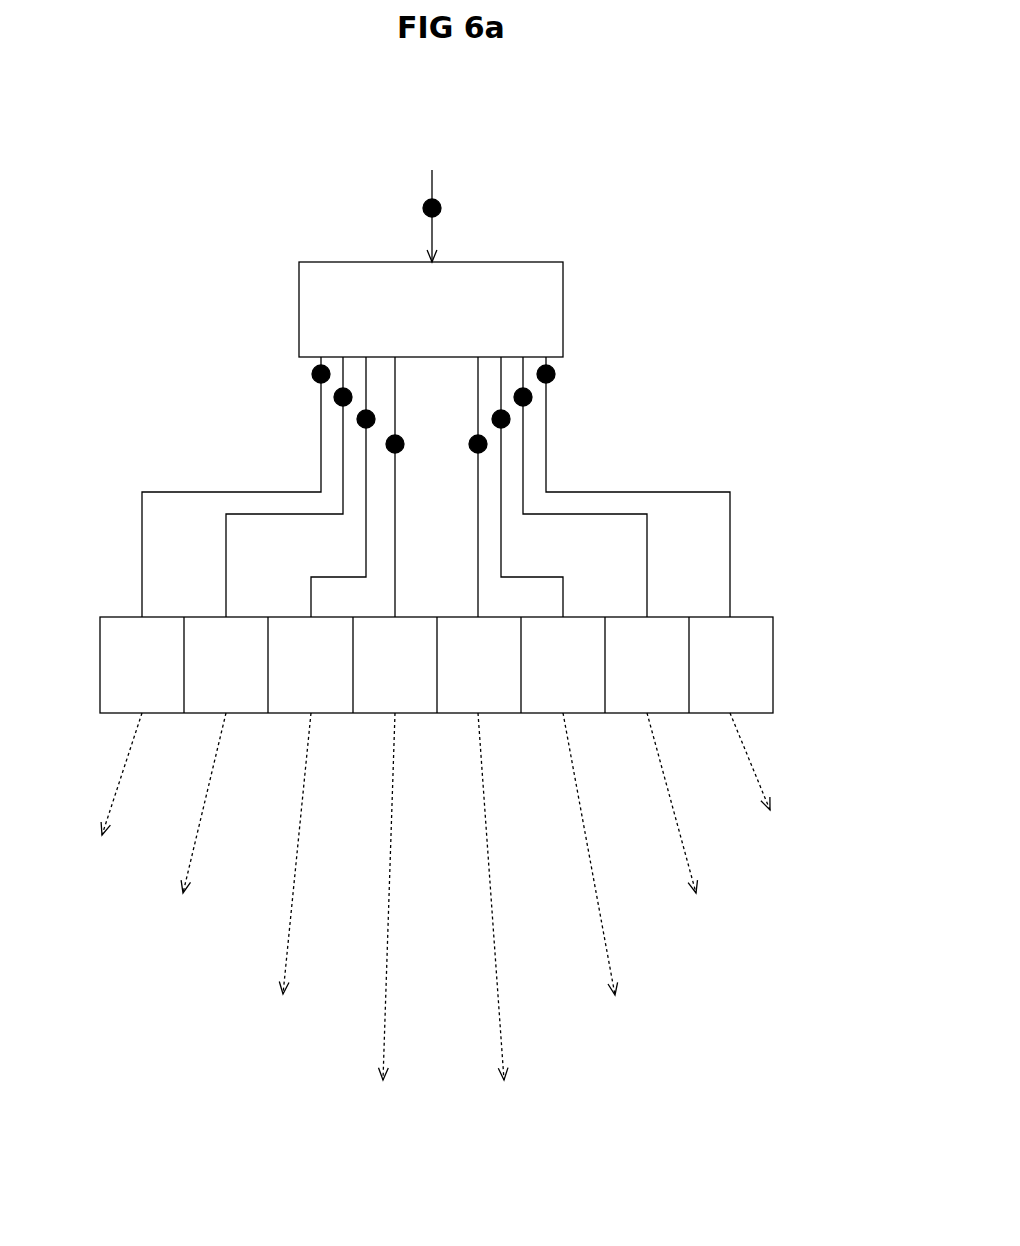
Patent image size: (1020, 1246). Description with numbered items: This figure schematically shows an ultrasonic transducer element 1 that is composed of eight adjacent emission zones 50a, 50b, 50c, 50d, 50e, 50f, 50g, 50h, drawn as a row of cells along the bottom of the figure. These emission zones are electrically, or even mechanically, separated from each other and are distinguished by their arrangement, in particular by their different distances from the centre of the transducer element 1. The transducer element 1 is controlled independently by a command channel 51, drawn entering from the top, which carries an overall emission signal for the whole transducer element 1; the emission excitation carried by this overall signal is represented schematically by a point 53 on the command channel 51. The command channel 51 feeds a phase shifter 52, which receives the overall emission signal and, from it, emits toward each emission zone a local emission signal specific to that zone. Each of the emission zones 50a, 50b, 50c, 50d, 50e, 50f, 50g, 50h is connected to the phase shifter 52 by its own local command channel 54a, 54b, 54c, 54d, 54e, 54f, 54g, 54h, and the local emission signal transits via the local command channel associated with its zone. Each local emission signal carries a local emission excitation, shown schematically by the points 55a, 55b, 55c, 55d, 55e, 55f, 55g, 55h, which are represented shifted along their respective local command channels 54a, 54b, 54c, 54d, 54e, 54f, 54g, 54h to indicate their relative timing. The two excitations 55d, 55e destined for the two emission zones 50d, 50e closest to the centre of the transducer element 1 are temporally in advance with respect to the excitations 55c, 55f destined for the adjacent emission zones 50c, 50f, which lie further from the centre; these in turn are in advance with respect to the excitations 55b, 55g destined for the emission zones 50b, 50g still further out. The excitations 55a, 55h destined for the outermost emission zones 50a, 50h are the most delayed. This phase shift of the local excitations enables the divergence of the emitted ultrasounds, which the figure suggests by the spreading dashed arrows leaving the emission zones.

The transducer element 1 is at (803, 651).
The command channel 51 is at (432, 180).
The phase shifter 52 is at (563, 318).
The point 53 is at (441, 206).
The local command channel 54a is at (142, 515).
The local command channel 54b is at (226, 540).
The local command channel 54c is at (366, 560).
The local command channel 54d is at (395, 603).
The local command channel 54e is at (478, 557).
The local command channel 54f is at (501, 572).
The local command channel 54g is at (647, 577).
The local command channel 54h is at (730, 510).
The point 55a is at (313, 372).
The point 55b is at (335, 396).
The point 55c is at (358, 419).
The point 55d is at (403, 447).
The point 55e is at (472, 440).
The point 55f is at (509, 419).
The point 55g is at (531, 396).
The point 55h is at (554, 372).
The emission zone 50a is at (112, 714).
The emission zone 50b is at (203, 714).
The emission zone 50c is at (283, 714).
The emission zone 50d is at (390, 714).
The emission zone 50e is at (470, 714).
The emission zone 50f is at (553, 714).
The emission zone 50g is at (640, 714).
The emission zone 50h is at (727, 714).